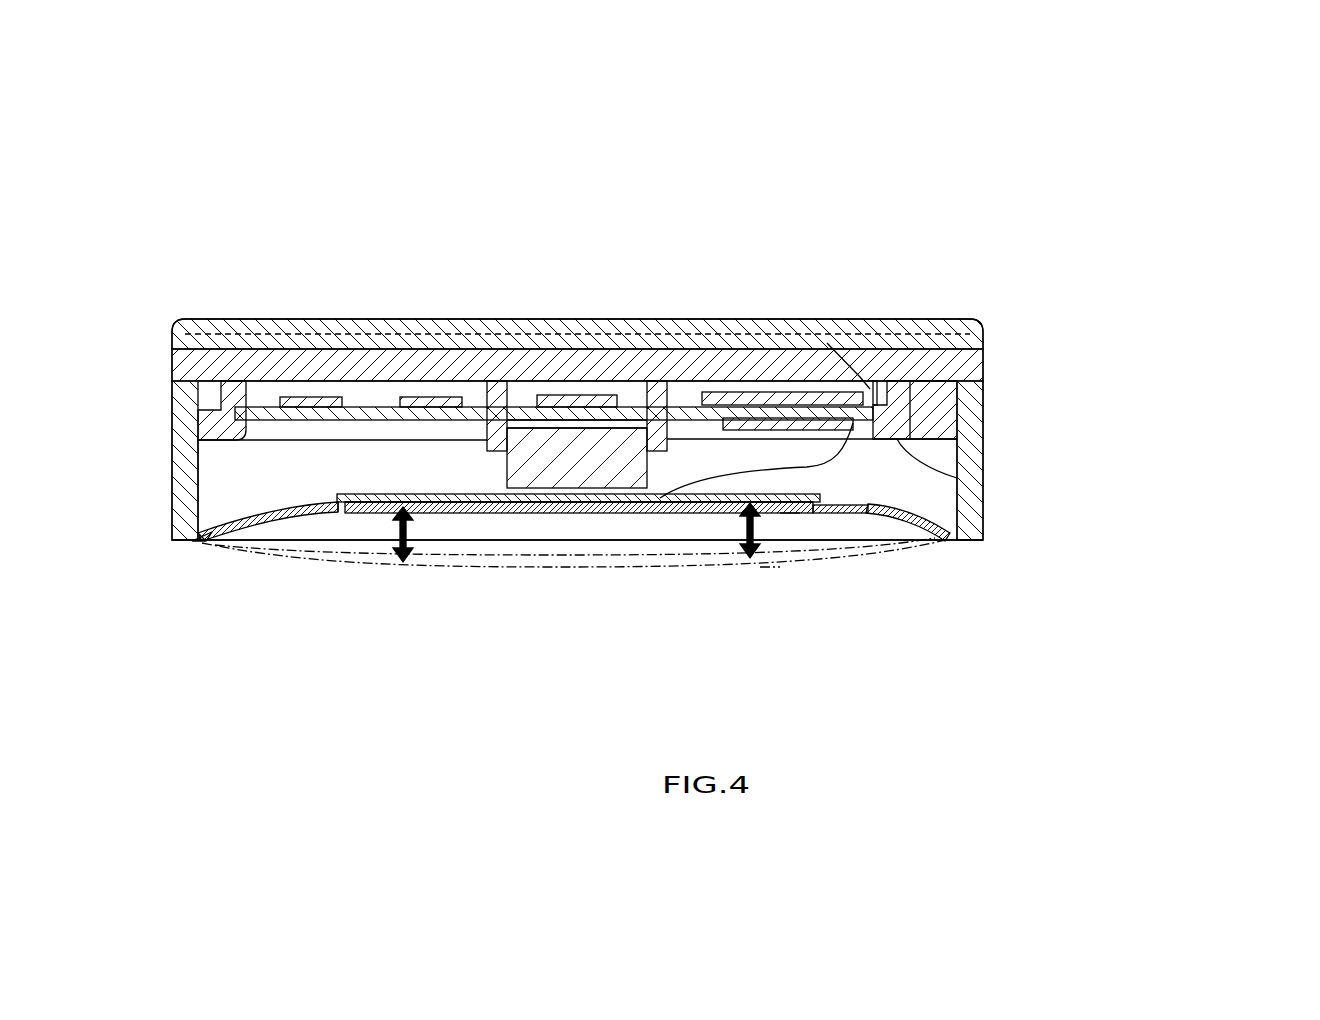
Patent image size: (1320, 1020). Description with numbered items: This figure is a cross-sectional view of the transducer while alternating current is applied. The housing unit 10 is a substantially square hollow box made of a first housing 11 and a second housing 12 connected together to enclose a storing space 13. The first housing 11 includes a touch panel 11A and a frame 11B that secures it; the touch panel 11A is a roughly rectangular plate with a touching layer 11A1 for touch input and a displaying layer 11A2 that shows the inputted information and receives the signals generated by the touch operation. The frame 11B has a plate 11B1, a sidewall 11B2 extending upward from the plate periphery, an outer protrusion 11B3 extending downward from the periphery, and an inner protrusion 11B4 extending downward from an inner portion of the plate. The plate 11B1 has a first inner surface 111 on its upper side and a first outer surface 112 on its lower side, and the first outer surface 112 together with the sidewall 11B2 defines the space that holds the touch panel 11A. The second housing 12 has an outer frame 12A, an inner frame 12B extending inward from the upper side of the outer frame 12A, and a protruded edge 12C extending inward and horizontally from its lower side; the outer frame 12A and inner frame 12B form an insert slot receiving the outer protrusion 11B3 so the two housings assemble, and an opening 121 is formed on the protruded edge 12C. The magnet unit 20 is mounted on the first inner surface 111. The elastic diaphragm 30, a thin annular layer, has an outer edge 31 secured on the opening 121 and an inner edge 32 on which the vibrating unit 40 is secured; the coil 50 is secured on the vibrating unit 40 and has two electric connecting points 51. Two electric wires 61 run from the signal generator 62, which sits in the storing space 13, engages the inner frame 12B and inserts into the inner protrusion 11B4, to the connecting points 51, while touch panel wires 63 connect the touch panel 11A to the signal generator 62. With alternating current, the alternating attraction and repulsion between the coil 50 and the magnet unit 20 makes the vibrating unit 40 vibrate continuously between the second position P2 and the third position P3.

The housing unit 10 is at (1247, 655).
The first housing 11 is at (1195, 453).
The touch panel 11A is at (1127, 135).
The touching layer 11A1 is at (710, 319).
The displaying layer 11A2 is at (647, 319).
The frame 11B is at (1128, 220).
The plate 11B1 is at (890, 345).
The sidewall 11B2 is at (920, 337).
The outer protrusion 11B3 is at (923, 375).
The inner protrusion 11B4 is at (660, 497).
The first inner surface 111 is at (873, 405).
The first outer surface 112 is at (875, 418).
The second housing 12 is at (1195, 465).
The outer frame 12A is at (985, 502).
The inner frame 12B is at (900, 419).
The protruded edge 12C is at (925, 540).
The opening 121 is at (927, 548).
The storing space 13 is at (515, 320).
The magnet unit 20 is at (597, 470).
The elastic diaphragm 30 is at (256, 516).
The outer edge 31 is at (188, 543).
The inner edge 32 is at (335, 513).
The vibrating unit 40 is at (505, 515).
The coil 50 is at (482, 507).
The electric connecting points 51 is at (337, 500).
The electric wires 61 is at (388, 530).
The signal generator 62 is at (563, 423).
The touch panel wires 63 is at (647, 455).
The second position P2 is at (792, 515).
The third position P3 is at (770, 570).